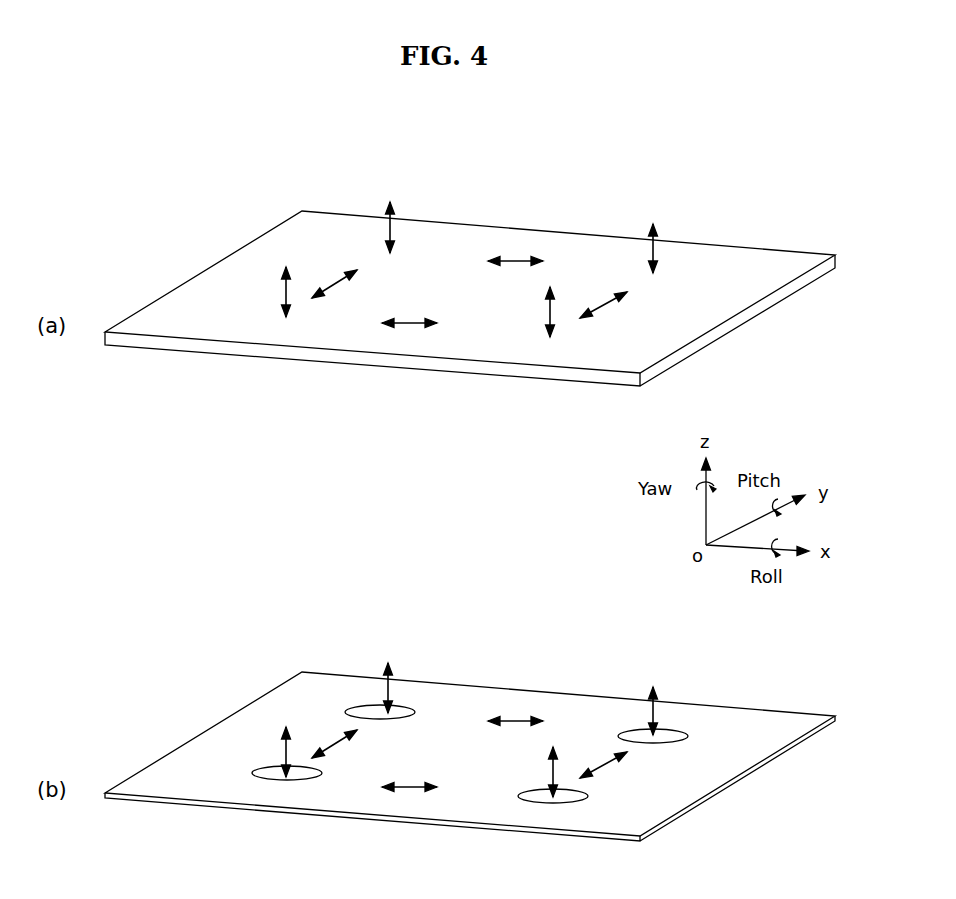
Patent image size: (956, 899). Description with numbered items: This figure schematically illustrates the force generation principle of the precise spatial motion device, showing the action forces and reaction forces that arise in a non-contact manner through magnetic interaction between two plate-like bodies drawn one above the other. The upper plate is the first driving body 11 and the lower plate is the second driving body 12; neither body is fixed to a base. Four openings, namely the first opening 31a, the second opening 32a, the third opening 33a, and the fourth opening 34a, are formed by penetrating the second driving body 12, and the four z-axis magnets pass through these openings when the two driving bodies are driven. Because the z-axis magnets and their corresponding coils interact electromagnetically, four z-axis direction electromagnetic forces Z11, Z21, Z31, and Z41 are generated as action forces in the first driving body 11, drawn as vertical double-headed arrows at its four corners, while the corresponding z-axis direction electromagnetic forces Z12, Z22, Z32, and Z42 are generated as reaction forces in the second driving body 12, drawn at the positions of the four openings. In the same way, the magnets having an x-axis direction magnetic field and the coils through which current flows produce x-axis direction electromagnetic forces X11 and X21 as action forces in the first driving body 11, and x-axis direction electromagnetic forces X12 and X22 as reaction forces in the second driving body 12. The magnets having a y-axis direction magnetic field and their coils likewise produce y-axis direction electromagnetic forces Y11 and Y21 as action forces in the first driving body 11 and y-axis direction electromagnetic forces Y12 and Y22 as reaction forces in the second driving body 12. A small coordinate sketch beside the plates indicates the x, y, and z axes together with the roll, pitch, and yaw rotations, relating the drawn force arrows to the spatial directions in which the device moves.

The first driving body 11 is at (448, 144).
The second driving body 12 is at (448, 604).
The first opening 31a is at (405, 711).
The second opening 32a is at (670, 738).
The third opening 33a is at (273, 778).
The fourth opening 34a is at (540, 800).
The z-axis direction electromagnetic force Z11 is at (389, 213).
The z-axis direction electromagnetic force Z21 is at (652, 233).
The z-axis direction electromagnetic force Z31 is at (262, 292).
The z-axis direction electromagnetic force Z41 is at (548, 326).
The x-axis direction electromagnetic force X11 is at (515, 277).
The x-axis direction electromagnetic force X21 is at (409, 311).
The y-axis direction electromagnetic force Y11 is at (342, 290).
The y-axis direction electromagnetic force Y21 is at (609, 313).
The z-axis direction electromagnetic force Z12 is at (385, 675).
The z-axis direction electromagnetic force Z22 is at (652, 696).
The z-axis direction electromagnetic force Z32 is at (262, 752).
The z-axis direction electromagnetic force Z42 is at (530, 772).
The x-axis direction electromagnetic force X12 is at (490, 720).
The x-axis direction electromagnetic force X22 is at (432, 790).
The y-axis direction electromagnetic force Y12 is at (342, 750).
The y-axis direction electromagnetic force Y22 is at (609, 774).